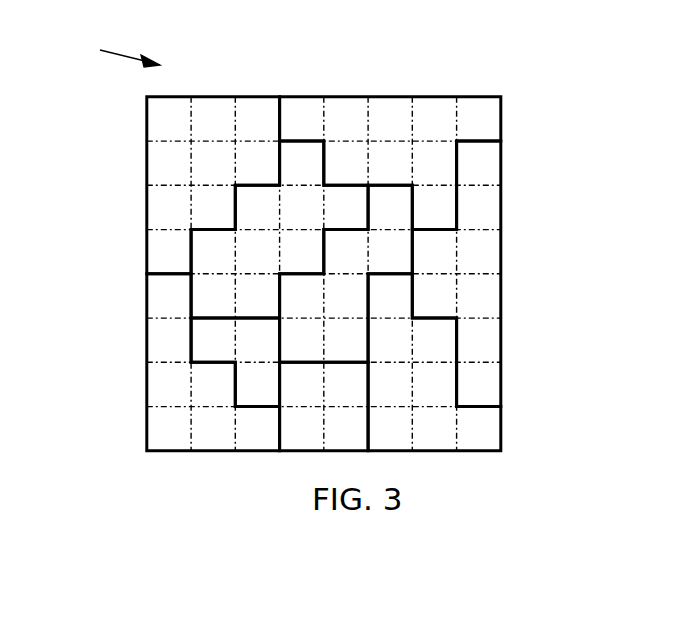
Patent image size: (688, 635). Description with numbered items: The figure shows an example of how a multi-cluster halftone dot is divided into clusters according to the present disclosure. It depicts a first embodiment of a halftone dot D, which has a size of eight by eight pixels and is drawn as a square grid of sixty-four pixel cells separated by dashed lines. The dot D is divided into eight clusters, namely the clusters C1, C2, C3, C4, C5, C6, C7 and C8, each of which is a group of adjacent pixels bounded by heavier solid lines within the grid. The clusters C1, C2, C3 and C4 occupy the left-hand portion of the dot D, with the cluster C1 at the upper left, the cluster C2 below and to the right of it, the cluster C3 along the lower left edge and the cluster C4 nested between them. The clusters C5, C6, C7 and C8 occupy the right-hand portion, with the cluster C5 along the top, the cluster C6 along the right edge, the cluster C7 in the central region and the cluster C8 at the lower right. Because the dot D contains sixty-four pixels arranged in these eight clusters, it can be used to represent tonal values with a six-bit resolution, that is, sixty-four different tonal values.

The cluster C1 is at (218, 157).
The cluster C2 is at (250, 213).
The cluster C3 is at (177, 299).
The cluster C4 is at (263, 377).
The cluster C5 is at (381, 156).
The cluster C6 is at (470, 213).
The cluster C7 is at (381, 258).
The cluster C8 is at (427, 420).
The halftone dot D is at (100, 50).